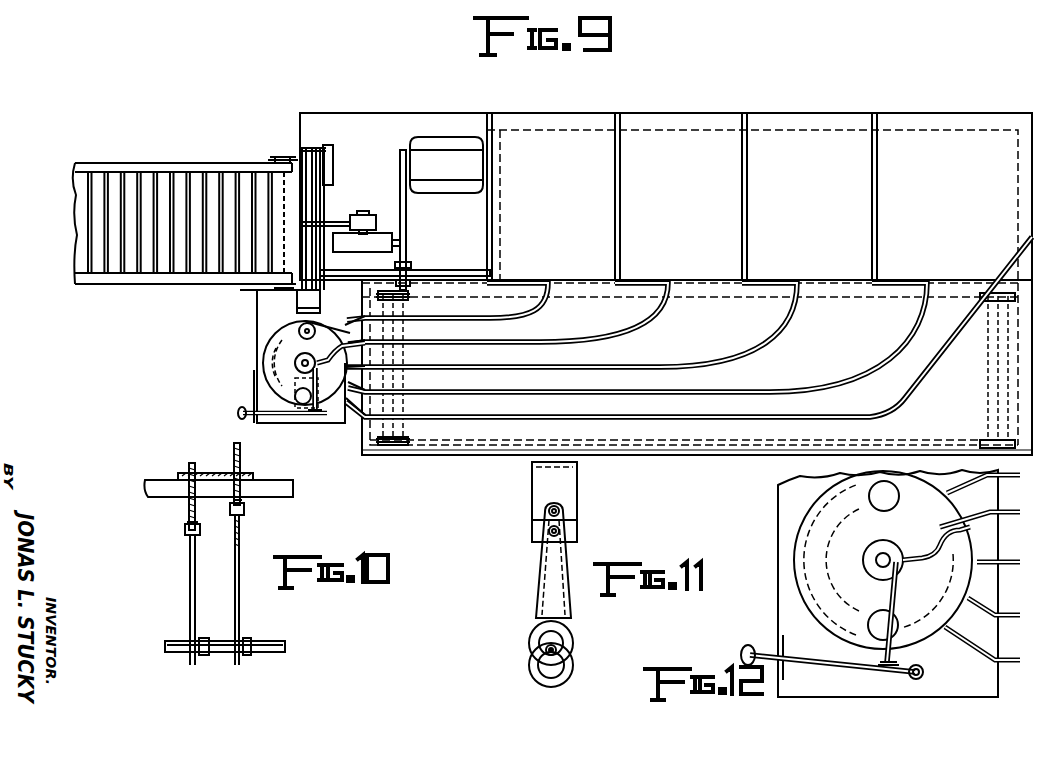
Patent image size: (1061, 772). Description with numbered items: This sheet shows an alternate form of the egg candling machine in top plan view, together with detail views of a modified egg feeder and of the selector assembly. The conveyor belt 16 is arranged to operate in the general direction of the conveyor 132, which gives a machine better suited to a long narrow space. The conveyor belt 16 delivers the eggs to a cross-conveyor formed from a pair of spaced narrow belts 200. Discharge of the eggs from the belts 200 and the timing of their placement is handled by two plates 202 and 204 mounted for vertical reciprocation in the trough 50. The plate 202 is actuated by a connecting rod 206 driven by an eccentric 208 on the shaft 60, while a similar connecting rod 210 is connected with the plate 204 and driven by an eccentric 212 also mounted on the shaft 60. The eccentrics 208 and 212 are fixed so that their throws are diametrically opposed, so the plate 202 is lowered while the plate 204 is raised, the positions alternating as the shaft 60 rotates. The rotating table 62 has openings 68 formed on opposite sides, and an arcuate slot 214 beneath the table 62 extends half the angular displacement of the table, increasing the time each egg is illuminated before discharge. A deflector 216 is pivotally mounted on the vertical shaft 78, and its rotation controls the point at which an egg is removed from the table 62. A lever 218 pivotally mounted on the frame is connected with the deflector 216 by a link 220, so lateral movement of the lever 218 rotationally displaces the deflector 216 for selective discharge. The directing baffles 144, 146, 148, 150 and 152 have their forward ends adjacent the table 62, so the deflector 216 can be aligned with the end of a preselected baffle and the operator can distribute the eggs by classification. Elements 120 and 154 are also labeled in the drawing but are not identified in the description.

In FIG. 9, the conveyor belt 16 is at (166, 272).
In FIG. 9, the trough 50 is at (297, 305).
In FIG. 10, the shaft 60 is at (176, 640).
In FIG. 11, the shaft 60 is at (540, 655).
In FIG. 9, the rotating table 62 is at (330, 325).
In FIG. 12, the rotating table 62 is at (838, 492).
In FIG. 9, the openings 68 is at (290, 325).
In FIG. 12, the openings 68 is at (898, 501).
In FIG. 12, the vertical shaft 78 is at (884, 540).
In FIG. 9, the cam shaft 120 is at (322, 327).
In FIG. 9, the conveyor 132 is at (456, 435).
In FIG. 9, the directing baffle 144 is at (420, 314).
In FIG. 9, the directing baffle 146 is at (422, 339).
In FIG. 9, the directing baffle 148 is at (424, 363).
In FIG. 9, the directing baffle 150 is at (427, 387).
In FIG. 9, the directing baffle 152 is at (430, 412).
In FIG. 9, the partition 154 is at (612, 216).
In FIG. 9, the spaced narrow belts 200 is at (330, 210).
In FIG. 10, the plate 202 is at (197, 462).
In FIG. 10, the plate 204 is at (242, 460).
In FIG. 11, the plate 204 is at (578, 480).
In FIG. 10, the connecting rod 206 is at (190, 565).
In FIG. 10, the eccentric 208 is at (204, 638).
In FIG. 10, the connecting rod 210 is at (242, 560).
In FIG. 11, the connecting rod 210 is at (568, 555).
In FIG. 10, the eccentric 212 is at (250, 638).
In FIG. 11, the eccentric 212 is at (566, 645).
In FIG. 9, the arcuate slot 214 is at (272, 356).
In FIG. 12, the arcuate slot 214 is at (838, 548).
In FIG. 9, the deflector 216 is at (348, 405).
In FIG. 12, the deflector 216 is at (948, 541).
In FIG. 9, the lever 218 is at (272, 418).
In FIG. 12, the lever 218 is at (826, 665).
In FIG. 9, the link 220 is at (300, 379).
In FIG. 12, the link 220 is at (898, 592).